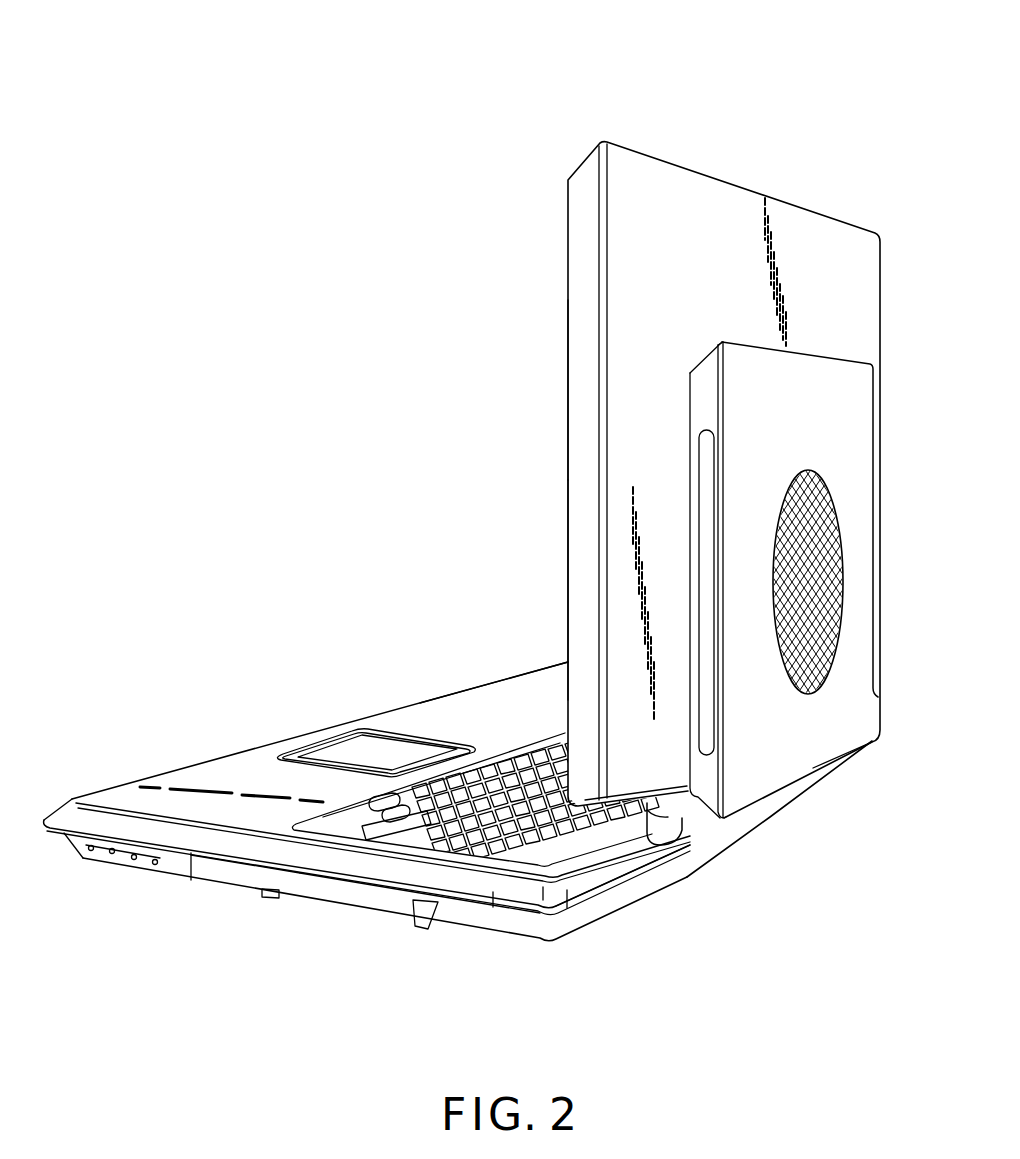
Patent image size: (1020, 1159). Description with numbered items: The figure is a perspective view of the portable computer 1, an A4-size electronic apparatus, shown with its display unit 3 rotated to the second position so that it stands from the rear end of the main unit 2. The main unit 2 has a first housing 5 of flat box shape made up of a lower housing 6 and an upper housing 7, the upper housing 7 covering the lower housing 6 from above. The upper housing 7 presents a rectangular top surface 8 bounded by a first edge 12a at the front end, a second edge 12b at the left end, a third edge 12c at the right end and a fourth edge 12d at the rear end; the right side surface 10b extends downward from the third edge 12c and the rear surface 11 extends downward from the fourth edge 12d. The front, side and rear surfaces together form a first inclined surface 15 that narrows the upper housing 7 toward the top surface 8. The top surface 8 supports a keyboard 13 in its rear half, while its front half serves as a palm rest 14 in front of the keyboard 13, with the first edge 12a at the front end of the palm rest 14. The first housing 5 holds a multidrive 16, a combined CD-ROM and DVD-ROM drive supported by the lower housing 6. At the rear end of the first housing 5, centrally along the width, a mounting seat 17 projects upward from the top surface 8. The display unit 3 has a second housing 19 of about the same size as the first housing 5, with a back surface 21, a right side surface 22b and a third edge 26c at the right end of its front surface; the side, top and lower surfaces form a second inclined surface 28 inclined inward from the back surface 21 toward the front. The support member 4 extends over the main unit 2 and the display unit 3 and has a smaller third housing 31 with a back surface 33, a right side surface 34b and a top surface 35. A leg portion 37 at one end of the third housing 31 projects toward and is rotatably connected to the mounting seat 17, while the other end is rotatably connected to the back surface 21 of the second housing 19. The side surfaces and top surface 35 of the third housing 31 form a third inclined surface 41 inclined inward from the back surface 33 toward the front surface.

The portable computer 1 is at (663, 90).
The main unit 2 is at (128, 773).
The display unit 3 is at (558, 307).
The support member 4 is at (845, 740).
The first housing 5 is at (163, 915).
The lower housing 6 is at (107, 865).
The upper housing 7 is at (188, 835).
The top surface 8 is at (270, 813).
The right side surface 10b is at (300, 853).
The rear surface 11 is at (597, 877).
The first edge 12a is at (200, 760).
The second edge 12b is at (507, 693).
The third edge 12c is at (372, 858).
The fourth edge 12d is at (603, 878).
The keyboard 13 is at (492, 818).
The palm rest 14 is at (433, 717).
The first inclined surface 15 is at (570, 890).
The multidrive 16 is at (340, 893).
The mounting seat 17 is at (768, 812).
The second housing 19 is at (833, 217).
The back surface 21 is at (733, 230).
The right side surface 22b is at (587, 388).
The third edge 26c is at (568, 472).
The second inclined surface 28 is at (583, 213).
The third housing 31 is at (810, 377).
The back surface 33 is at (850, 440).
The right side surface 34b is at (703, 407).
The top surface 35 is at (704, 353).
The leg portion 37 is at (672, 820).
The third inclined surface 41 is at (722, 342).